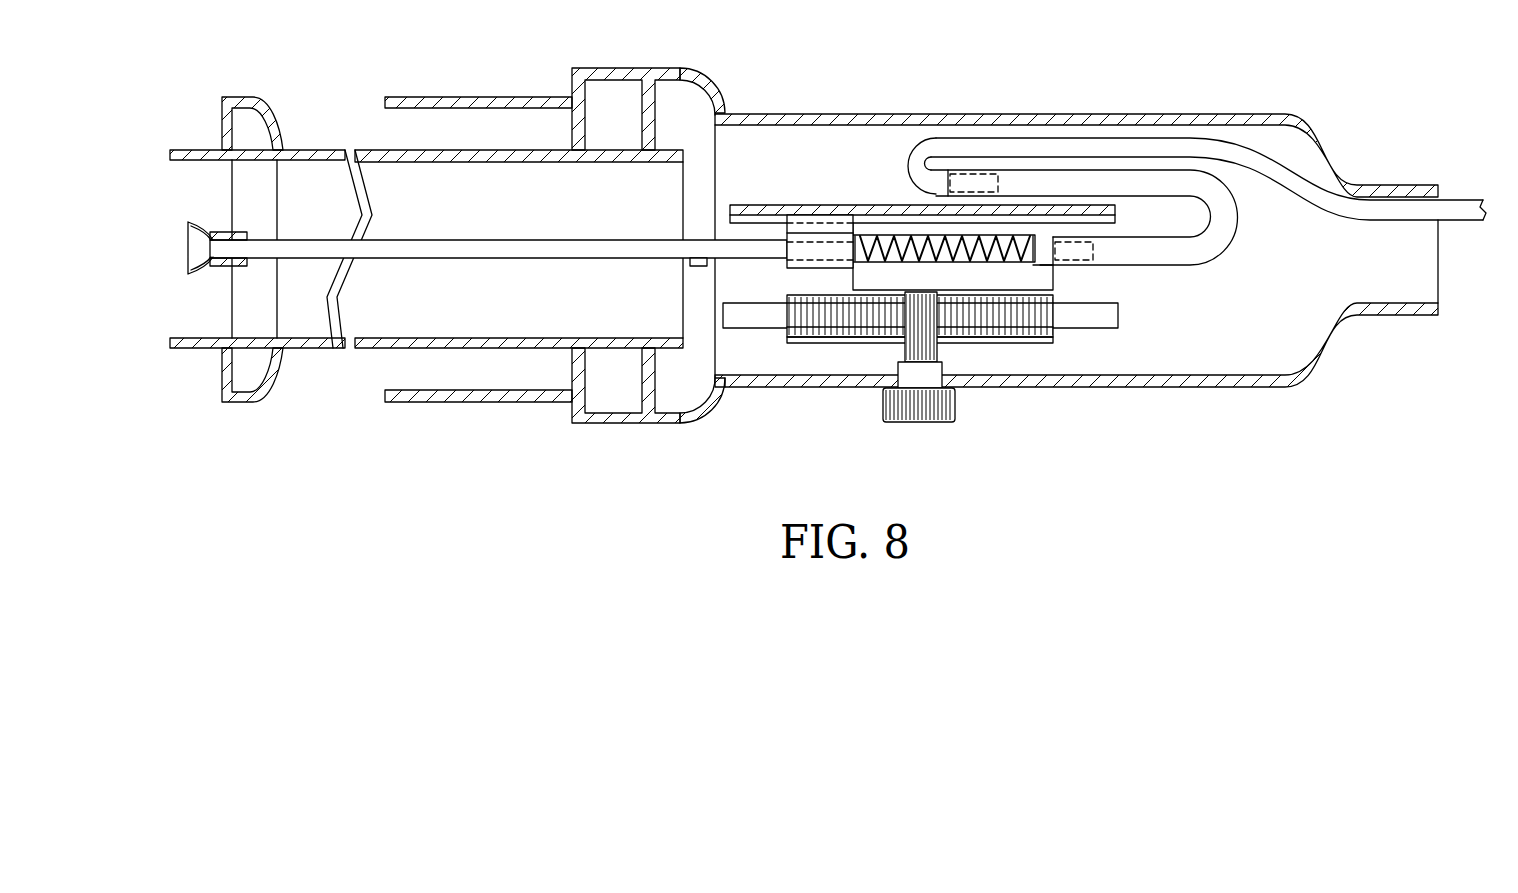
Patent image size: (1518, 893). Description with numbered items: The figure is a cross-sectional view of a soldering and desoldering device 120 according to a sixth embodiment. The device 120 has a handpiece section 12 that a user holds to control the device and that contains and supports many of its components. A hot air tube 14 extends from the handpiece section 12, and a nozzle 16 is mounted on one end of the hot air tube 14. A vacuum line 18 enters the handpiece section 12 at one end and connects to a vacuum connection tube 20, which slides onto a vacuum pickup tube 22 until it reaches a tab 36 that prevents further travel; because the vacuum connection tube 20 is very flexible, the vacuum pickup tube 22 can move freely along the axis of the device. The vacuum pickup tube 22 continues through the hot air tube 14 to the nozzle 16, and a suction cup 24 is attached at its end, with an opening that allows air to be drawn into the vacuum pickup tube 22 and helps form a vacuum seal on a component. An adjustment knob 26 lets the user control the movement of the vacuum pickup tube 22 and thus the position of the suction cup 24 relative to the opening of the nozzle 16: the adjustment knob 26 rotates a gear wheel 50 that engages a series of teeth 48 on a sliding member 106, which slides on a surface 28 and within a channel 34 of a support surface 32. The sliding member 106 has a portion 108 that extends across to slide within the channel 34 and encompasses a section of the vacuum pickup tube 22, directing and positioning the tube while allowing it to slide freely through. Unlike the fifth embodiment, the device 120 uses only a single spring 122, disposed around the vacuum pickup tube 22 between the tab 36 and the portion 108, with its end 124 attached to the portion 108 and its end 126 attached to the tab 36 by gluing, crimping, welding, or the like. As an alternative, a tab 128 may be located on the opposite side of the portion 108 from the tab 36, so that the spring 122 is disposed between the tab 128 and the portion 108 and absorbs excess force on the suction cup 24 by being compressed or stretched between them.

The soldering and desoldering device 120 is at (1056, 54).
The handpiece section 12 is at (1150, 113).
The hot air tube 14 is at (365, 148).
The nozzle 16 is at (192, 148).
The vacuum line 18 is at (1293, 180).
The vacuum connection tube 20 is at (1238, 242).
The vacuum pickup tube 22 is at (433, 259).
The suction cup 24 is at (193, 226).
The adjustment knob 26 is at (955, 405).
The surface 28 is at (1110, 324).
The support surface 32 is at (822, 205).
The channel 34 is at (753, 220).
The tab 36 is at (1053, 264).
The series of teeth 48 is at (997, 326).
The gear wheel 50 is at (903, 346).
The sliding member 106 is at (798, 342).
The portion 108 is at (786, 266).
The spring 122 is at (912, 238).
The end 124 is at (856, 263).
The end 126 is at (1033, 264).
The tab 128 is at (697, 267).